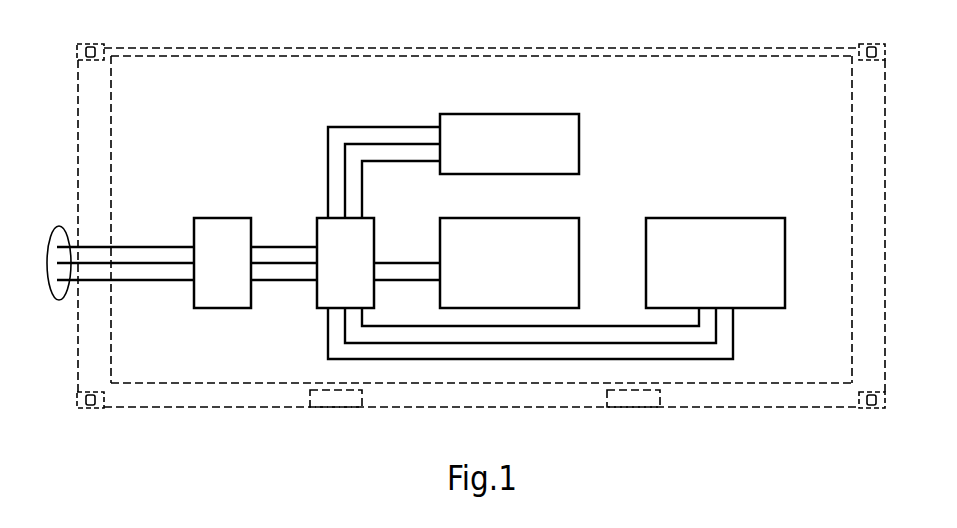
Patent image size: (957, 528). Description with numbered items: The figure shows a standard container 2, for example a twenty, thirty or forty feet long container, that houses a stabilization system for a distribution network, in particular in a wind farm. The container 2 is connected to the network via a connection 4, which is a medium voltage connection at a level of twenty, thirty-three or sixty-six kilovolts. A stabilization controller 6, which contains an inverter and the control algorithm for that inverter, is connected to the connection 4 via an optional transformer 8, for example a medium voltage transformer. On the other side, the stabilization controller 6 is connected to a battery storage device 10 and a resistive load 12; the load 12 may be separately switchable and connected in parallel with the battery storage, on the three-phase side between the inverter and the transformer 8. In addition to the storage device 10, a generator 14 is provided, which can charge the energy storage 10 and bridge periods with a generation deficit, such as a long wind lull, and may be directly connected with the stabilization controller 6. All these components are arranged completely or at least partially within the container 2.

The standard container 2 is at (700, 48).
The connection 4 is at (57, 228).
The stabilization controller 6 is at (354, 276).
The transformer 8 is at (231, 276).
The battery storage device 10 is at (523, 276).
The resistive load 12 is at (523, 157).
The generator 14 is at (729, 276).